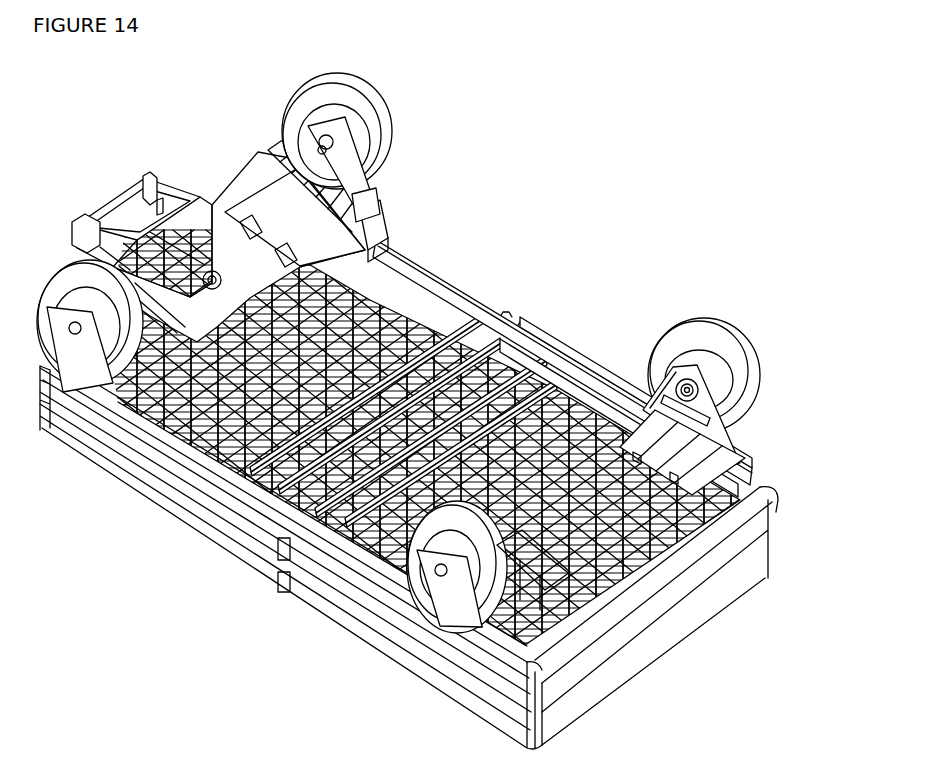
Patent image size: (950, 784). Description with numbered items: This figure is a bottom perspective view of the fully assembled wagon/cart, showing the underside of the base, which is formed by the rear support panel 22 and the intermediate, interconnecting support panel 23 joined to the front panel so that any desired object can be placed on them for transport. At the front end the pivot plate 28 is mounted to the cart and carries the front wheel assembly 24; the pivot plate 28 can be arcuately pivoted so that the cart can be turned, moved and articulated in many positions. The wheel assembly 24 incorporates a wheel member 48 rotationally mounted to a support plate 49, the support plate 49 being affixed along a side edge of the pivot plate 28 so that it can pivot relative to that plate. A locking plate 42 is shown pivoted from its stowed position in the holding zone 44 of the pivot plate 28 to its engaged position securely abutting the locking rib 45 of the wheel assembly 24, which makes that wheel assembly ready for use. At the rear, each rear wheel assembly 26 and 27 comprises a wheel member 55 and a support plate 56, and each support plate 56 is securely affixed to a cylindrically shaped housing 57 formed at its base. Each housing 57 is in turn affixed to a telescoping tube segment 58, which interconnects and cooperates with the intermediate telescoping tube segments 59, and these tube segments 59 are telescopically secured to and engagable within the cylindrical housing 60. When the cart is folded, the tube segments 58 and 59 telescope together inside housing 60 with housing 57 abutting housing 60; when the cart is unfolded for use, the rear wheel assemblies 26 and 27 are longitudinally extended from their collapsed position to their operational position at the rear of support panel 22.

The rear support panel 22 is at (440, 277).
The intermediate, interconnecting support panel 23 is at (528, 317).
The wheel assembly 24 is at (365, 131).
The rear wheel assembly 26 is at (712, 316).
The rear wheel assembly 27 is at (427, 577).
The pivot plate 28 is at (378, 238).
The locking plate 42 is at (270, 210).
The holding zone 44 is at (227, 253).
The locking rib 45 is at (312, 130).
The wheel member 48 is at (343, 90).
The support plate 49 is at (347, 173).
The wheel member 55 is at (736, 360).
The support plate 56 is at (738, 452).
The cylindrically shaped housing 57 is at (776, 502).
The telescoping tube segment 58 is at (586, 382).
The intermediate, telescoping tube segments 59 is at (458, 300).
The cylindrical housing 60 is at (383, 250).